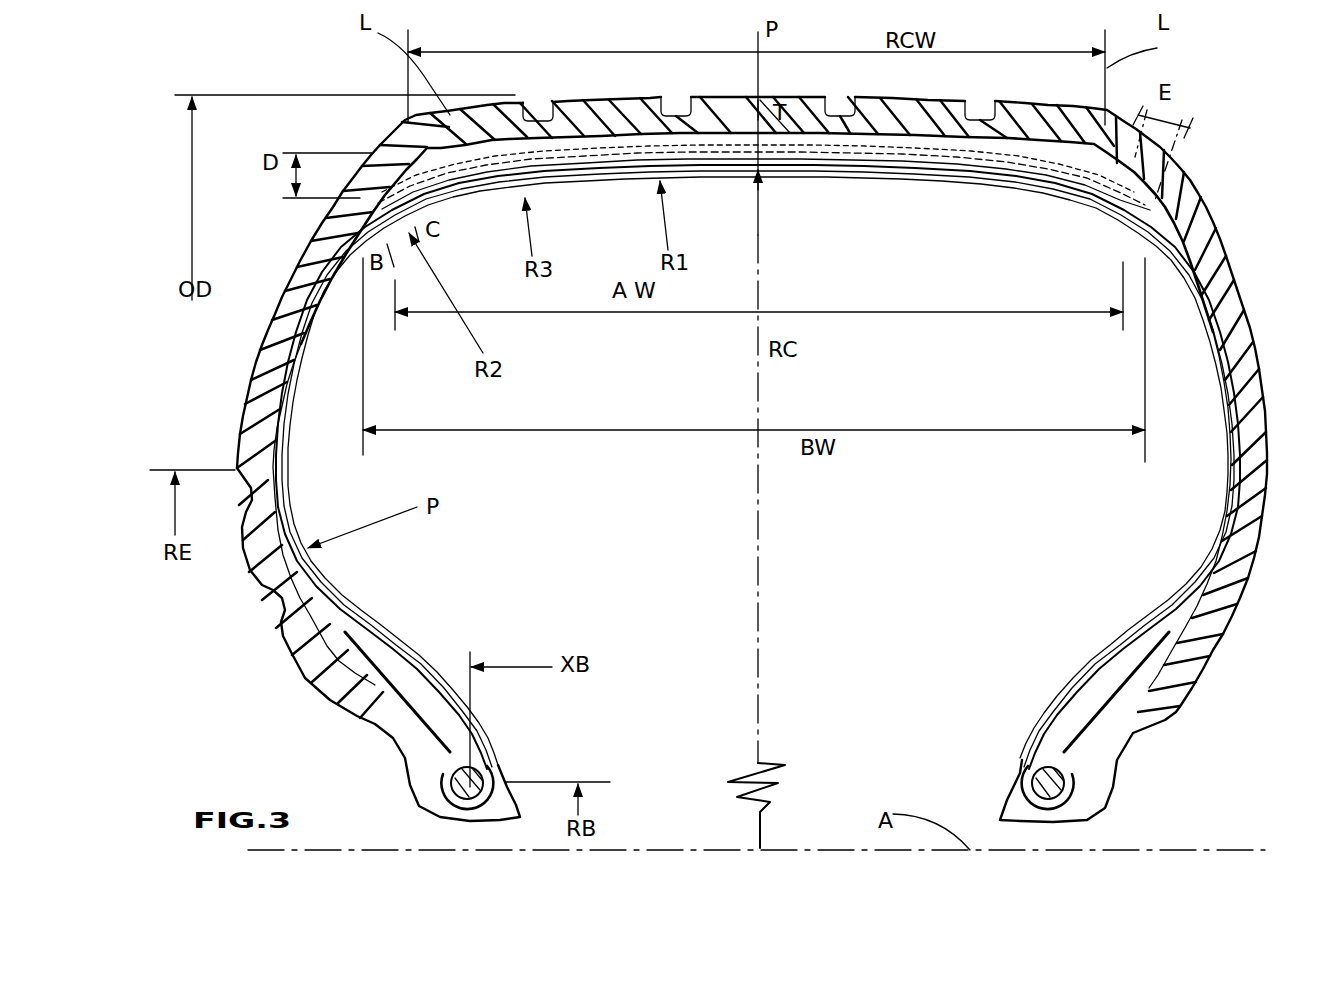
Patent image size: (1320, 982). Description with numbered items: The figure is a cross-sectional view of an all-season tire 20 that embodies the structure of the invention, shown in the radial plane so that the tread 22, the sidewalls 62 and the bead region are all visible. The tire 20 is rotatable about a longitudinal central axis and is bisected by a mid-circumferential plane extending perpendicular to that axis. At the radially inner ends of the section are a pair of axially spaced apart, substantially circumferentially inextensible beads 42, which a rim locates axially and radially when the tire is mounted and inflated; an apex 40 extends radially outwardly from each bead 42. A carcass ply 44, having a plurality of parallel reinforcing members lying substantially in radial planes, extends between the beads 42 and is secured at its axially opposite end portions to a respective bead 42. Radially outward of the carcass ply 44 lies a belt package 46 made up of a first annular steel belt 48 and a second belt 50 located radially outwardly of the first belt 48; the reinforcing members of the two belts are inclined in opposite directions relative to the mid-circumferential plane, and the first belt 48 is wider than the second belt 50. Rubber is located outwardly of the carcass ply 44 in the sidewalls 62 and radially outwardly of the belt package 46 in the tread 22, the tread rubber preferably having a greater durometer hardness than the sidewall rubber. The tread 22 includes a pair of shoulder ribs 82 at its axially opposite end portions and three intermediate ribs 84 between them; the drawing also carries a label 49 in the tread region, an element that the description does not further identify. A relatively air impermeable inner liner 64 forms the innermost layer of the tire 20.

The tire 20 is at (575, 58).
The tread 22 is at (938, 95).
The apex 40 is at (367, 655).
The bead 42 is at (497, 757).
The carcass ply 44 is at (467, 201).
The belt package 46 is at (1152, 208).
The first annular belt 48 is at (998, 188).
The tread element 49 is at (787, 112).
The second belt 50 is at (907, 180).
The sidewall 62 is at (255, 390).
The inner liner 64 is at (292, 403).
The shoulder rib 82 is at (453, 123).
The intermediate rib 84 is at (585, 102).